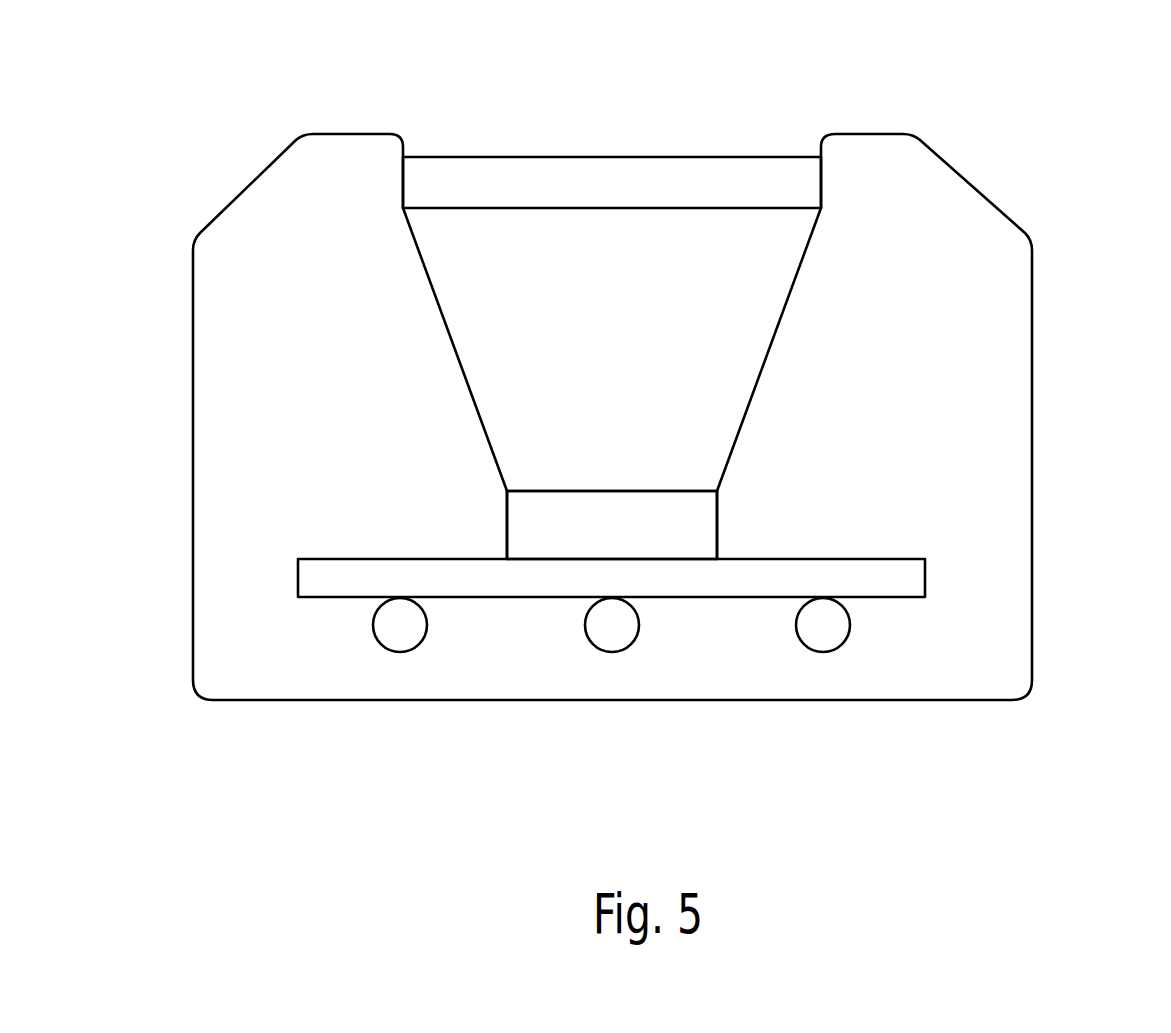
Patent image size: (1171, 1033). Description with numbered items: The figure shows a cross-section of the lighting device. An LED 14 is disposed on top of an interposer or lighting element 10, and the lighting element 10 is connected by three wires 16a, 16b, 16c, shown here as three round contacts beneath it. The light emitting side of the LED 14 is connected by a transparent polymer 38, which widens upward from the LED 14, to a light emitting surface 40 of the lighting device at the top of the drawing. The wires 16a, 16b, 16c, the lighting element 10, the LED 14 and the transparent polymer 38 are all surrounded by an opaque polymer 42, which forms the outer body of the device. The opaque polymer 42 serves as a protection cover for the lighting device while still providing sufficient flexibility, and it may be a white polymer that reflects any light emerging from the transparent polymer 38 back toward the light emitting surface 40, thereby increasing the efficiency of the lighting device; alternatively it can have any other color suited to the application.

The lighting element 10 is at (902, 583).
The LED 14 is at (675, 542).
The wire 16a is at (398, 625).
The wire 16b is at (610, 625).
The wire 16c is at (821, 625).
The transparent polymer 38 is at (770, 262).
The light emitting surface 40 is at (567, 158).
The opaque polymer 42 is at (273, 183).